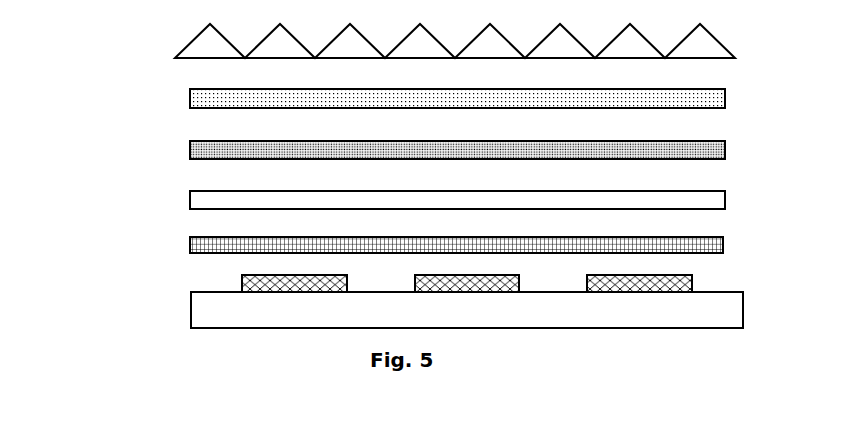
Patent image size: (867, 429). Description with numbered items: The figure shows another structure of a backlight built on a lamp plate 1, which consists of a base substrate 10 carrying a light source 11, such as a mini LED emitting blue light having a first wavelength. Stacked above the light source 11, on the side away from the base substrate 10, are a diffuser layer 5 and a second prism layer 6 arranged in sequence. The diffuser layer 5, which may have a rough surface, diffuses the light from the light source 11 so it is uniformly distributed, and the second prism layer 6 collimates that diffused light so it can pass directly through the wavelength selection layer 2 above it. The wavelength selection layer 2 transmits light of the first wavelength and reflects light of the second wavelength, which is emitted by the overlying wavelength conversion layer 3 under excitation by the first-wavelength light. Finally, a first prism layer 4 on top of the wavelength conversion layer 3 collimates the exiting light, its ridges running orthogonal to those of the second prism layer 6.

The lamp plate 1 is at (102, 262).
The base substrate 10 is at (218, 313).
The light source 11 is at (258, 282).
The diffuser layer 5 is at (218, 243).
The second prism layer 6 is at (218, 200).
The wavelength selection layer 2 is at (218, 148).
The wavelength conversion layer 3 is at (220, 97).
The first prism layer 4 is at (220, 48).